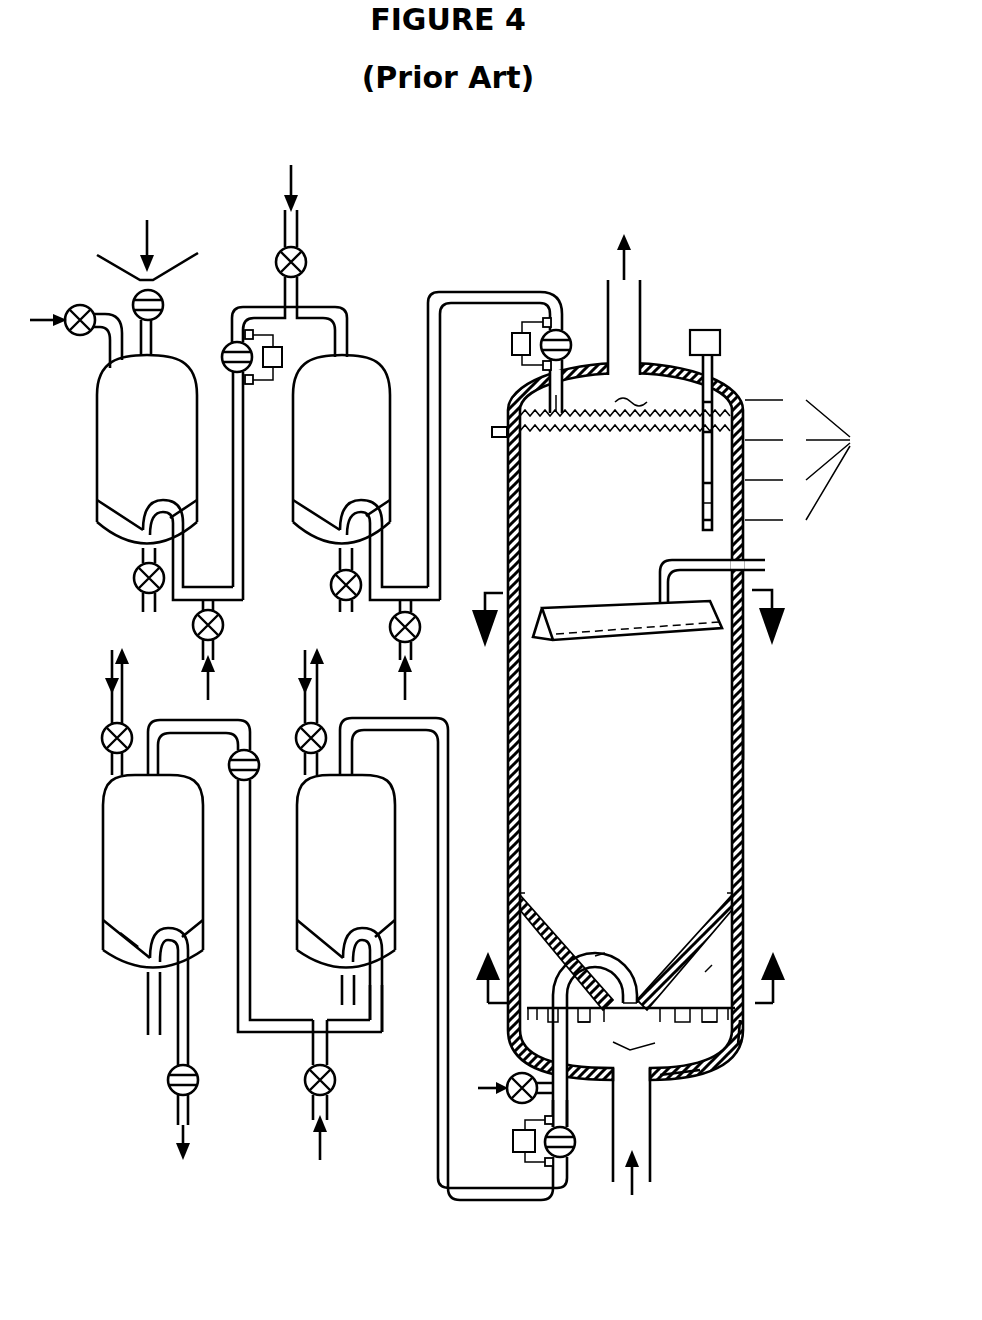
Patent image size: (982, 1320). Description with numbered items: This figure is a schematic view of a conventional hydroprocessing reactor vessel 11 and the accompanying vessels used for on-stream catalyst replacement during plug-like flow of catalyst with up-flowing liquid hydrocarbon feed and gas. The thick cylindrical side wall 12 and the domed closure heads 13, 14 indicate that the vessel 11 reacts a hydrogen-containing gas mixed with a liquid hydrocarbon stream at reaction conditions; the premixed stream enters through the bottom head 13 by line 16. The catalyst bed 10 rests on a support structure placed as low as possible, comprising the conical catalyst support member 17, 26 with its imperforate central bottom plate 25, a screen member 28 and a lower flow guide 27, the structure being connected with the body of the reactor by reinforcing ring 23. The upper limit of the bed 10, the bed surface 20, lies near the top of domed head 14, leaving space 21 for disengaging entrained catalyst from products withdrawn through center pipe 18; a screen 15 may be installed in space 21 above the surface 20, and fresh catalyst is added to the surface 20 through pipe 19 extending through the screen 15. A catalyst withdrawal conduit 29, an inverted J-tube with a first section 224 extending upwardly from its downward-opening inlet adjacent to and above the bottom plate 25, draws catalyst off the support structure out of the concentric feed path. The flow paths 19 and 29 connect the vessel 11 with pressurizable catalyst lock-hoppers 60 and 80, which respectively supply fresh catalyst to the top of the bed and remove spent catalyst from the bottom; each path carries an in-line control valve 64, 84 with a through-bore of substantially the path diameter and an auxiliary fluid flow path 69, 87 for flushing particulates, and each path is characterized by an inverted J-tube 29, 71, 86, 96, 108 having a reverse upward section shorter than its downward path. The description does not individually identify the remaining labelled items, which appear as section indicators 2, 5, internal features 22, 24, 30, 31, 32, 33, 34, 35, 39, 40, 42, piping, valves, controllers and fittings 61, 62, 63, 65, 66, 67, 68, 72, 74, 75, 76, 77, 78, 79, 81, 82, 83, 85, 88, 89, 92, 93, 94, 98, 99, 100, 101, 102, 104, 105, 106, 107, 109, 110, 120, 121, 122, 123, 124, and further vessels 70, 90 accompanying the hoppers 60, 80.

The section line 2- 2 is at (630, 967).
The section line 5- 5 is at (628, 634).
The catalyst bed 10 is at (625, 760).
The reactor vessel 11 is at (758, 760).
The cylindrical side wall 12 is at (746, 832).
The bottom head 13 is at (705, 1073).
The domed head 14 is at (718, 382).
The screen 15 is at (651, 432).
The line 16 is at (652, 1143).
The conical catalyst support member 17 is at (710, 968).
The center pipe 18 is at (643, 327).
The pipe 19 is at (565, 400).
The bed surface 20 is at (596, 432).
The space 21 is at (632, 388).
The ports 22 is at (493, 433).
The reinforcing ring 23 is at (517, 917).
The heaters 24 is at (814, 461).
The bottom plate 25 is at (523, 1023).
The conical support member 26 is at (693, 971).
The lower flow guide 27 is at (560, 940).
The screen member 28 is at (714, 945).
The catalyst withdrawal conduit 29 is at (593, 950).
The feed tube outlet 30 is at (637, 998).
The lower wall 31 is at (747, 1035).
The nozzle 32 is at (728, 1018).
The side chamber 33 is at (544, 970).
The drain 34 is at (650, 1055).
The nozzle 35 is at (582, 1040).
The nozzle pipe 39 is at (642, 590).
The distributor tray 40 is at (575, 606).
The inlet pipe 42 is at (772, 555).
The catalyst lock-hopper 60 is at (386, 375).
The feed pipe 61 is at (455, 292).
The feed pipe 62 is at (540, 290).
The controller 63 is at (512, 343).
The in-line control valve 64 is at (567, 334).
The inlet pipe 65 is at (543, 372).
The inlet pipe 66 is at (300, 232).
The valve 67 is at (308, 263).
The valve 68 is at (390, 627).
The auxiliary fluid flow path 69 is at (411, 651).
The feed vessel 70 is at (95, 447).
The inverted J-tube 71 is at (163, 497).
The drain valve 72 is at (142, 527).
The controller 74 is at (283, 355).
The control valve 75 is at (226, 367).
The pipe 76 is at (247, 493).
The gas inlet pipe 77 is at (215, 651).
The valve 78 is at (193, 626).
The cone bottom 79 is at (117, 516).
The catalyst lock-hopper 80 is at (396, 822).
The pipe 81 is at (546, 1112).
The transfer pipe 82 is at (448, 812).
The controller 83 is at (513, 1141).
The in-line control valve 84 is at (571, 1134).
The connector 85 is at (545, 1162).
The inverted J-tube 86 is at (364, 935).
The auxiliary fluid flow path 87 is at (545, 1082).
The valve 88 is at (510, 1082).
The cone bottom 89 is at (340, 953).
The receiving vessel 90 is at (103, 832).
The pipe 92 is at (249, 902).
The valve 93 is at (297, 731).
The control valve 94 is at (229, 765).
The inverted J-tube 96 is at (162, 935).
The pipe 98 is at (150, 775).
The cone bottom 99 is at (140, 950).
The feed hopper 100 is at (175, 266).
The feed pipe 101 is at (153, 330).
The control valve 102 is at (163, 300).
The valve 104 is at (58, 318).
The gas inlet 105 is at (72, 333).
The pipe 106 is at (110, 352).
The valve 107 is at (335, 1082).
The inverted J-tube 108 is at (357, 500).
The drain valve 109 is at (332, 542).
The valve 110 is at (106, 752).
The drain pipe 120 is at (342, 986).
The pipe 121 is at (388, 948).
The drain pipe 122 is at (148, 986).
The cone bottom 123 is at (112, 944).
The control valve 124 is at (176, 1045).
The first section 224 is at (614, 955).